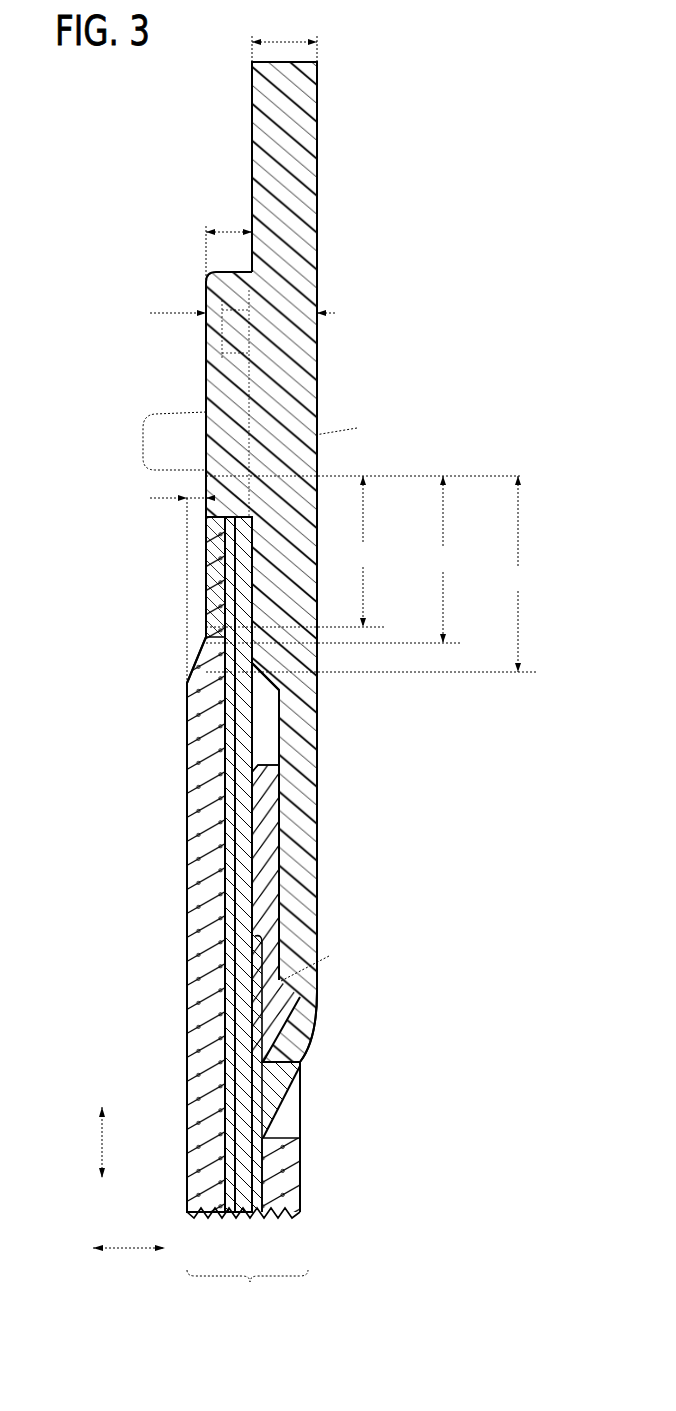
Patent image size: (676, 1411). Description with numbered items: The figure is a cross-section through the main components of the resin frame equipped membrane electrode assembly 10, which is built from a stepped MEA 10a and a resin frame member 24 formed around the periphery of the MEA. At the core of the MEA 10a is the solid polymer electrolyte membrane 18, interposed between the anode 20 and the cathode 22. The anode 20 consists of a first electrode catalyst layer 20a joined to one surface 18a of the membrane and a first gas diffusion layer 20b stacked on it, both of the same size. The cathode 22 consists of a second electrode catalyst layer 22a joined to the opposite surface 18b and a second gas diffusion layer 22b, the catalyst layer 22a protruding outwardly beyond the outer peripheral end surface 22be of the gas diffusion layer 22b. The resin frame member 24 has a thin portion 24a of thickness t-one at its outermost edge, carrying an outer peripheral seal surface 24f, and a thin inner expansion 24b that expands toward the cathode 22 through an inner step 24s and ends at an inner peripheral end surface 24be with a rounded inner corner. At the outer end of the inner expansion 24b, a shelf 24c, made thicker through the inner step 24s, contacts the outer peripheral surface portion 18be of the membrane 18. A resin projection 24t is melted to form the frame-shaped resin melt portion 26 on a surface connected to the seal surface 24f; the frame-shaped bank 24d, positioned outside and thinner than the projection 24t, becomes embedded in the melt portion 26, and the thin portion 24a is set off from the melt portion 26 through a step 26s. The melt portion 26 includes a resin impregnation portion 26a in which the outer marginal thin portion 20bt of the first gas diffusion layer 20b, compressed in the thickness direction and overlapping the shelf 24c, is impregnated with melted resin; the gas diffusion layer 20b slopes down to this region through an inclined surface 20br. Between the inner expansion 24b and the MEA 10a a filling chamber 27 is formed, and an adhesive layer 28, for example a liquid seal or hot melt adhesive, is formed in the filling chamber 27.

The resin frame equipped membrane electrode assembly 10 is at (88, 88).
The stepped MEA 10a is at (247, 1292).
The solid polymer electrolyte membrane 18 is at (243, 1216).
The one surface of the solid polymer electrolyte membrane 18a is at (228, 886).
The surface of the solid polymer electrolyte membrane 18b is at (250, 918).
The outer peripheral surface portion of the solid polymer electrolyte membrane 18be is at (240, 560).
The anode 20 is at (210, 1216).
The first electrode catalyst layer 20a is at (226, 1012).
The first gas diffusion layer 20b is at (215, 1053).
The outer marginal thin portion 20bt is at (215, 600).
The inclined surface 20br is at (200, 660).
The cathode 22 is at (288, 1216).
The second electrode catalyst layer 22a is at (290, 1185).
The second gas diffusion layer 22b is at (283, 1150).
The outer peripheral end surface of the second gas diffusion layer 22be is at (283, 1058).
The resin frame member 24 is at (319, 95).
The thin portion 24a is at (262, 133).
The inner expansion 24b is at (305, 870).
The inner peripheral end surface 24be is at (312, 1008).
The shelf 24c is at (250, 570).
The bank 24d is at (205, 338).
The outer peripheral seal surface 24f is at (250, 97).
The inner step 24s is at (270, 692).
The resin projection 24t is at (165, 412).
The resin melt portion 26 is at (198, 441).
The resin impregnation portion 26a is at (222, 540).
The step 26s is at (232, 272).
The filling chamber 27 is at (268, 730).
The adhesive layer 28 is at (268, 820).